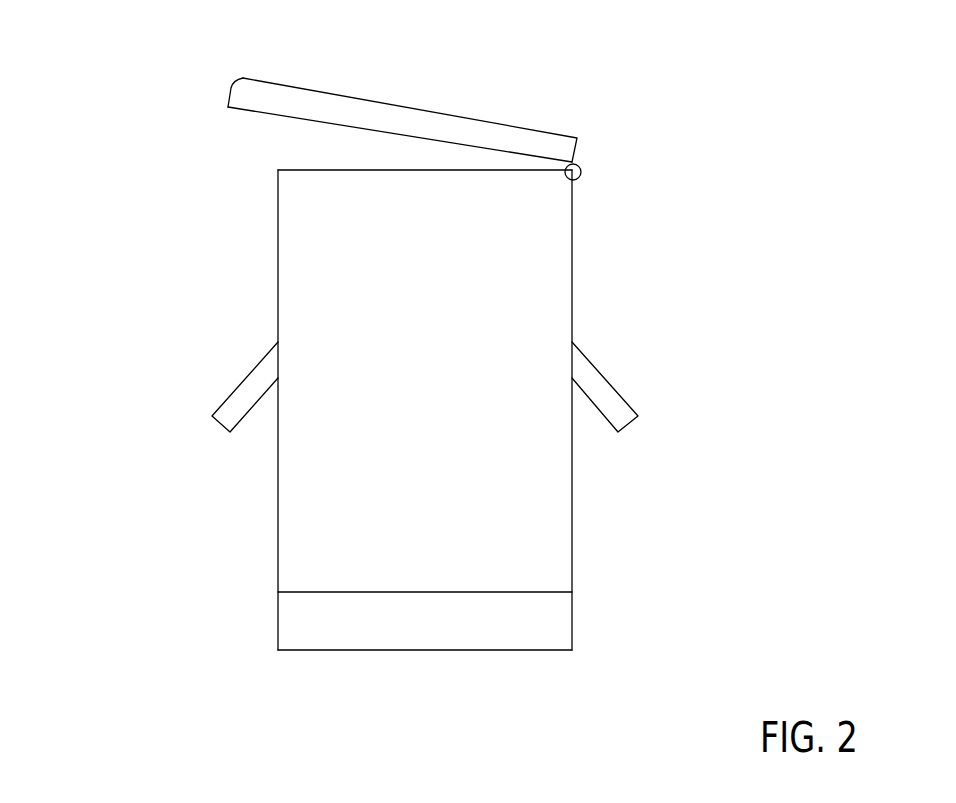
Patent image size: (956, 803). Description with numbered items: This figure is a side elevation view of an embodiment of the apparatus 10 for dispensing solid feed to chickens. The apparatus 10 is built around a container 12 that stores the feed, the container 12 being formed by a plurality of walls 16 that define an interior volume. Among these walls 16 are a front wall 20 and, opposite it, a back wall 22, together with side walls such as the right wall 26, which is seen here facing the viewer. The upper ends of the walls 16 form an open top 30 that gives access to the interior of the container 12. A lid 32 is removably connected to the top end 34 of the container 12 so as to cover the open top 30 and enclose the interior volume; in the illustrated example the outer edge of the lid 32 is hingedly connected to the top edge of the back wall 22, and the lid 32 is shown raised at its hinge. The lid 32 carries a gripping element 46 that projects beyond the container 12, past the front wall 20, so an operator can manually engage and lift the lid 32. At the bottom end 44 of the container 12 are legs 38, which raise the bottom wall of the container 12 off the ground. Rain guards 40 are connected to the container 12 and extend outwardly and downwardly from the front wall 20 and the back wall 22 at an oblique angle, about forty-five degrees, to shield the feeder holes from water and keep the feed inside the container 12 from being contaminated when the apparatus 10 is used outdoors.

The apparatus 10 is at (671, 162).
The container 12 is at (636, 220).
The walls 16 is at (267, 484).
The front wall 20 is at (267, 268).
The back wall 22 is at (583, 246).
The right wall 26 is at (522, 233).
The open top 30 is at (309, 159).
The lid 32 is at (468, 118).
The top end 34 is at (217, 146).
The legs 38 is at (572, 617).
The rain guard 40 is at (232, 392).
The bottom end 44 is at (224, 652).
The gripping element 46 is at (247, 78).